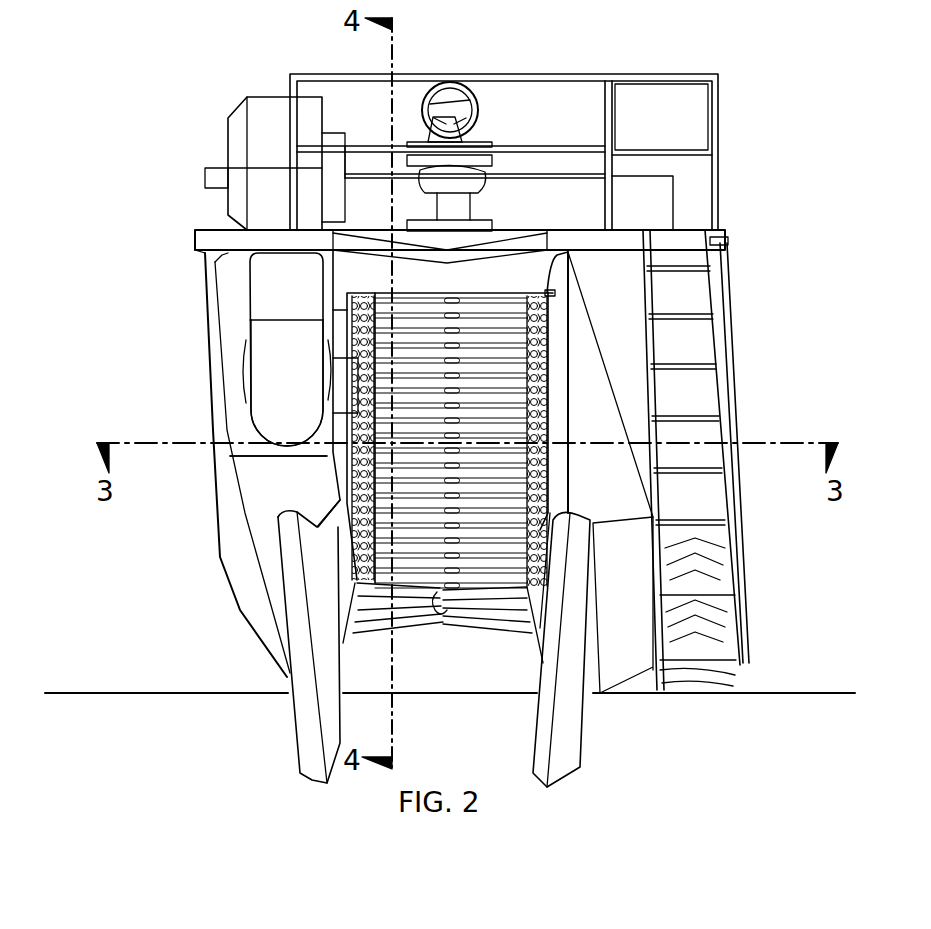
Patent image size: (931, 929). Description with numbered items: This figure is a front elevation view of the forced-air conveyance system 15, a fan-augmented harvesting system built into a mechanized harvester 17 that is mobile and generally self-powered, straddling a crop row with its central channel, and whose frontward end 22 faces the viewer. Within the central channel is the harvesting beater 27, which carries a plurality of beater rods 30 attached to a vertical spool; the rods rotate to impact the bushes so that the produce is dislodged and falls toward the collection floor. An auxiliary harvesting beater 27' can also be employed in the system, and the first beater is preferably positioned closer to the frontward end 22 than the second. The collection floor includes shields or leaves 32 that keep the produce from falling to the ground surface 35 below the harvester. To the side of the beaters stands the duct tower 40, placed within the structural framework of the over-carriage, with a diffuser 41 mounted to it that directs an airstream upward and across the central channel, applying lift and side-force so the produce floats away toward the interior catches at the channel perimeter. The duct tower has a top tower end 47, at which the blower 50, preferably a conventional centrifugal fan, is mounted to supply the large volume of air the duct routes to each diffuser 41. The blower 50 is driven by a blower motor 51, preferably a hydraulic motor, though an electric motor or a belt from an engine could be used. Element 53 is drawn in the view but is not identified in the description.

The forced-air conveyance system 15 is at (127, 195).
The mechanized harvester 17 is at (745, 200).
The frontward end 22 is at (276, 658).
The harvesting beater 27 is at (367, 488).
The auxiliary harvesting beater 27' is at (518, 488).
The beater rods 30 is at (438, 570).
The shields or leaves 32 is at (470, 620).
The ground surface 35 is at (115, 690).
The duct tower 40 is at (263, 380).
The diffuser 41 is at (350, 463).
The top tower end 47 is at (268, 300).
The blower 50 is at (237, 140).
The blower motor 51 is at (215, 178).
The drive coupling 53 is at (350, 138).